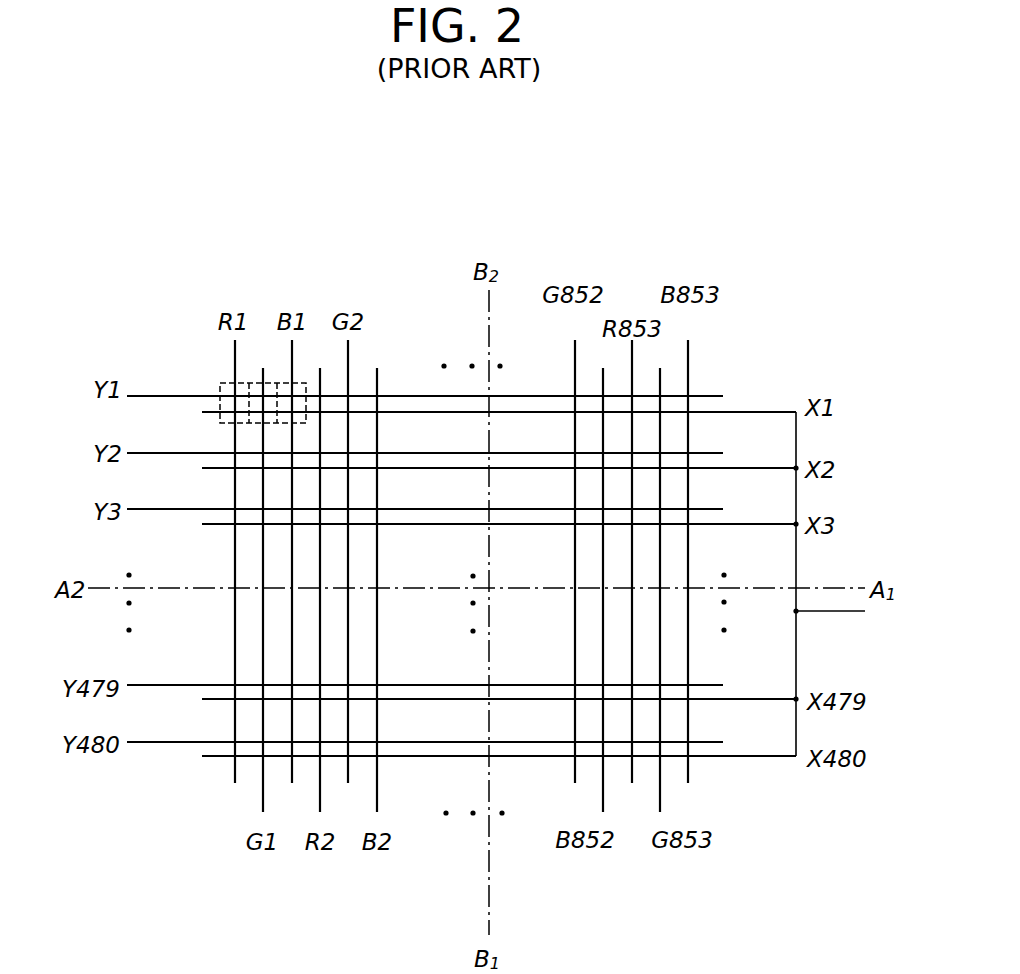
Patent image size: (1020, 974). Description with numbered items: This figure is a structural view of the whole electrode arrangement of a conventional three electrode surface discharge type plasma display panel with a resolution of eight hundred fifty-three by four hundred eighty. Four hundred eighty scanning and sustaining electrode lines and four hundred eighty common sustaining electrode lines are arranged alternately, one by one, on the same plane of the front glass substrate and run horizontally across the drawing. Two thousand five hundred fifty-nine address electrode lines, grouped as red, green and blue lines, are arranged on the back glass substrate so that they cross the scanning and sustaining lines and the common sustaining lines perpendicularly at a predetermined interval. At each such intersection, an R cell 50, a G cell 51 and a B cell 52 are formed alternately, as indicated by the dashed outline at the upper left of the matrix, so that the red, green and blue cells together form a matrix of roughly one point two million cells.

The R cell 50 is at (220, 384).
The G cell 51 is at (263, 382).
The B cell 52 is at (293, 382).